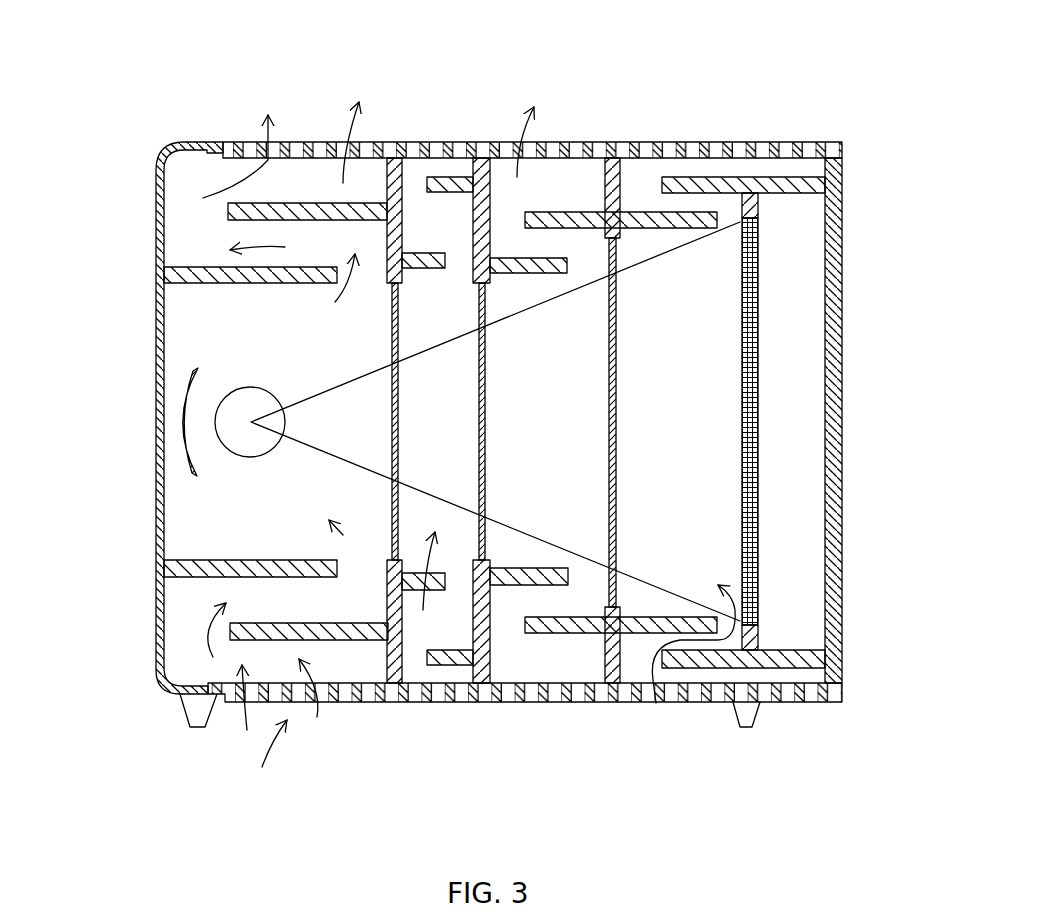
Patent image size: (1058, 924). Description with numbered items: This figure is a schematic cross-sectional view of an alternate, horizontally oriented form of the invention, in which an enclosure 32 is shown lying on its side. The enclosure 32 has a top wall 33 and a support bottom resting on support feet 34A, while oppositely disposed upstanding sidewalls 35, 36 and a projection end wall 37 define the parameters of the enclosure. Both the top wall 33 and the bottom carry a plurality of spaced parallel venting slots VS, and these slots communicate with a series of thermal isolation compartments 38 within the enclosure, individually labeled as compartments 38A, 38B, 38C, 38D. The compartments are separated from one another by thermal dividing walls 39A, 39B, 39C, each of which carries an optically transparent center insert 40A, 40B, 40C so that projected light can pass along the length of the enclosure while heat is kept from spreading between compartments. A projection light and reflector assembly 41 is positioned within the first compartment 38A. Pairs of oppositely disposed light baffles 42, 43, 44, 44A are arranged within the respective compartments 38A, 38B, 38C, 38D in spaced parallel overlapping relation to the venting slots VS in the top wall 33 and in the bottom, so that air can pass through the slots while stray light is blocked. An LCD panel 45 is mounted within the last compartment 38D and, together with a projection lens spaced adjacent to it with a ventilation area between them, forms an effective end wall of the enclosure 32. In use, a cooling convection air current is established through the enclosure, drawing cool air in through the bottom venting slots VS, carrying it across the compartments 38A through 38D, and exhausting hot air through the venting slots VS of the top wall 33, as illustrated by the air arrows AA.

The enclosure 32 is at (786, 94).
The top wall 33 is at (562, 138).
The support feet 34A is at (196, 720).
The sidewall 35 is at (154, 466).
The sidewall 36 is at (845, 219).
The projection end wall 37 is at (623, 175).
The thermal isolation compartments 38 is at (700, 484).
The first compartment 38A is at (243, 318).
The thermal isolation compartment 38B is at (428, 545).
The thermal isolation compartment 38C is at (504, 655).
The thermal isolation compartment 38D is at (657, 257).
The thermal dividing wall 39A is at (387, 600).
The thermal dividing wall 39B is at (492, 603).
The thermal dividing wall 39C is at (606, 655).
The optically transparent center insert 40A is at (398, 392).
The optically transparent center insert 40B is at (485, 375).
The optically transparent center insert 40C is at (616, 370).
The projection light and reflector assembly 41 is at (241, 383).
The light baffles 42 is at (313, 203).
The light baffles 43 is at (447, 177).
The light baffles 44 is at (585, 212).
The light baffles 44A is at (683, 180).
The LCD panel 45 is at (740, 427).
The venting slots VS is at (702, 150).
The air arrows AA is at (273, 752).